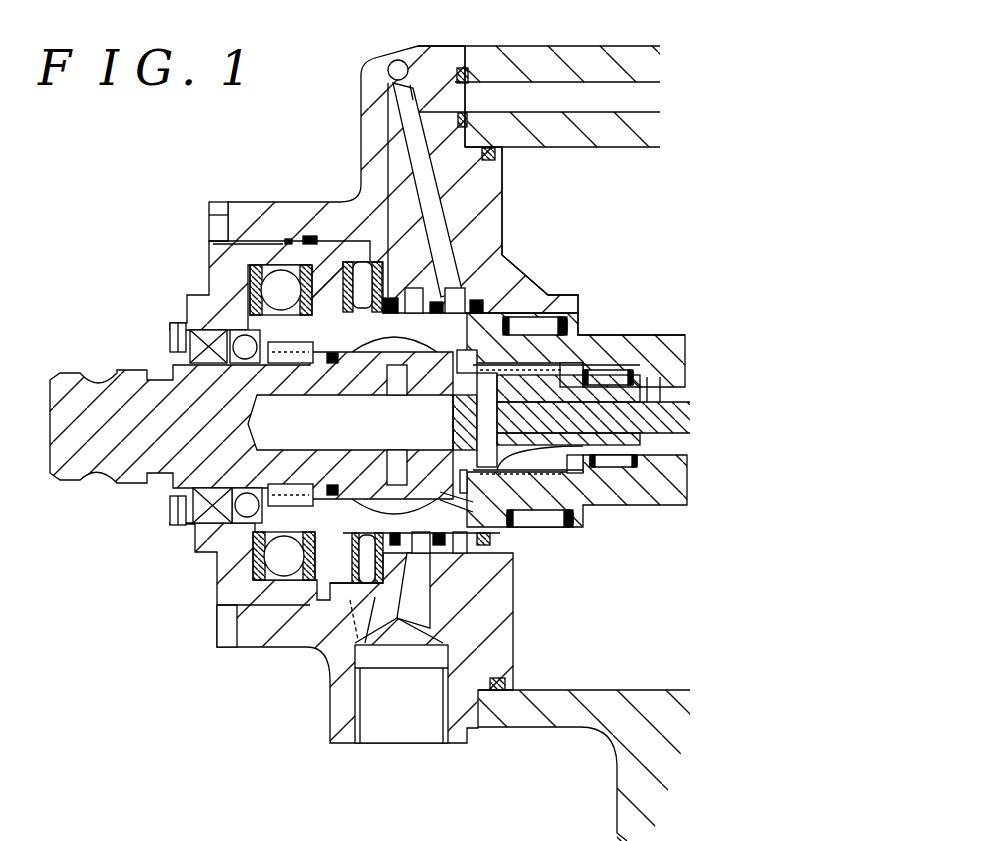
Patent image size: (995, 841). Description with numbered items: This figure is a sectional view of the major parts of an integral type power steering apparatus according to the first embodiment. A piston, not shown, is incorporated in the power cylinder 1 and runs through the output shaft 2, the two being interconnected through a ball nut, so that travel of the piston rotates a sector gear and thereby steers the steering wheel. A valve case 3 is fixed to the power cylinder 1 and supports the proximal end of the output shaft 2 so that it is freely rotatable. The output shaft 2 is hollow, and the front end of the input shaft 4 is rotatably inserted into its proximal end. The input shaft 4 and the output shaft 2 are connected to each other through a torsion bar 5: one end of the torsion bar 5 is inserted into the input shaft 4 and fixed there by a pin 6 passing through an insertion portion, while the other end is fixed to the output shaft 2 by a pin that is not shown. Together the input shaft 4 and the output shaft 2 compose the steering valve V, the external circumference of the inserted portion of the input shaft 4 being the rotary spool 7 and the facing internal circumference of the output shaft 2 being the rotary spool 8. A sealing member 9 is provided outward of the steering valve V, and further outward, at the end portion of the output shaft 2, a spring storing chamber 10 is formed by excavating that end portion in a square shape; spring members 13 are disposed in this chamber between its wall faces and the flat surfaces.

The power cylinder 1 is at (530, 58).
The output shaft 2 is at (658, 348).
The valve case 3 is at (462, 733).
The input shaft 4 is at (62, 427).
The torsion bar 5 is at (678, 423).
The pin 6 is at (453, 418).
The rotary spool 7 is at (366, 472).
The rotary spool 8 is at (373, 64).
The sealing member 9 is at (334, 485).
The spring storing chamber 10 is at (288, 500).
The spring members 13 is at (283, 350).
The steering valve V is at (330, 270).